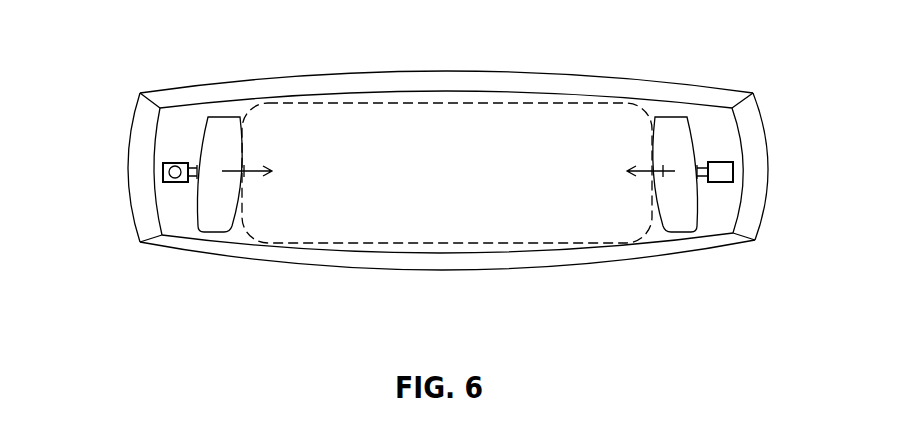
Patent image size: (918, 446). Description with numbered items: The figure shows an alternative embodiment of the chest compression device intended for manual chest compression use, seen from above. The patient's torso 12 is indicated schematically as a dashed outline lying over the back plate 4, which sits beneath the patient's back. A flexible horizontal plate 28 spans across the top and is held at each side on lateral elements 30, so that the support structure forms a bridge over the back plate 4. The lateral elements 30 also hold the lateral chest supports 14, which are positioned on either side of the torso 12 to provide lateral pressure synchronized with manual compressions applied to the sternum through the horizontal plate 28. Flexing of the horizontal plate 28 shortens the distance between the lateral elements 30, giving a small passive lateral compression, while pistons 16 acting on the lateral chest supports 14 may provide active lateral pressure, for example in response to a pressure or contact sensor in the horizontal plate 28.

The back plate 4 is at (287, 248).
The torso 12 is at (532, 243).
The lateral chest supports 14 is at (220, 130).
The pistons 16 is at (163, 165).
The horizontal plate 28 is at (577, 73).
The lateral elements 30 is at (147, 220).